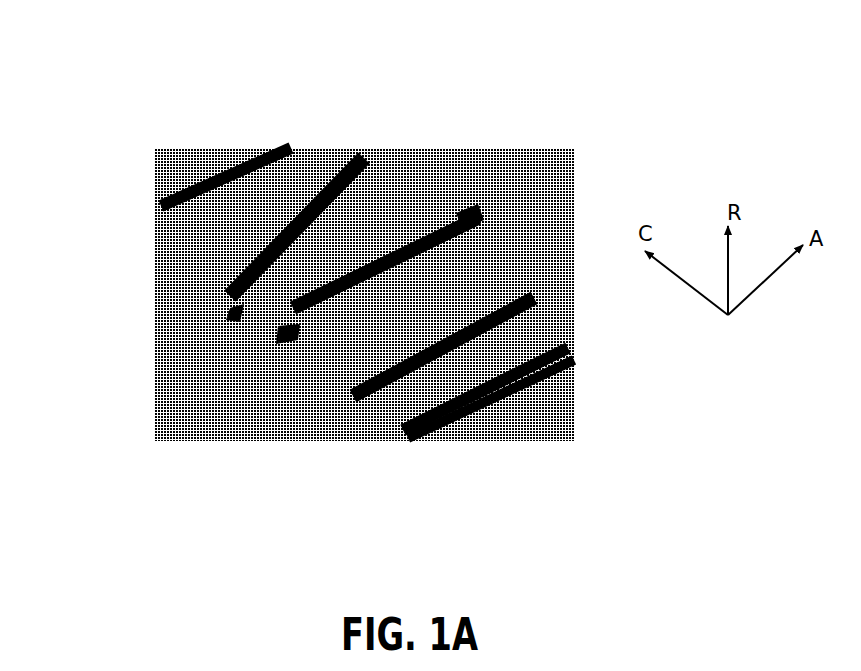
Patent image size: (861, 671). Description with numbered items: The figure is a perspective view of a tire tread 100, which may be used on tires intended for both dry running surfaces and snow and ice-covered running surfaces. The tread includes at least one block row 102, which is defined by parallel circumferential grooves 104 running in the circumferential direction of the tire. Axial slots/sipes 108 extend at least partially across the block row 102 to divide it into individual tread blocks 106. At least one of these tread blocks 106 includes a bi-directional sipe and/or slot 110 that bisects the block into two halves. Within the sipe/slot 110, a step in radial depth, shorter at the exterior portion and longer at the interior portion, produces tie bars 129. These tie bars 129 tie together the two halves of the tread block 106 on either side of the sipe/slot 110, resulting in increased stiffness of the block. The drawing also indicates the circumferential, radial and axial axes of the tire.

The tire tread 100 is at (96, 93).
The block row 102 is at (500, 444).
The circumferential groove 104 is at (456, 210).
The tread block 106 is at (241, 155).
The axial slot/sipe 108 is at (298, 185).
The bi-directional sipe and/or slot 110 is at (366, 225).
The tie bar 129 is at (280, 322).